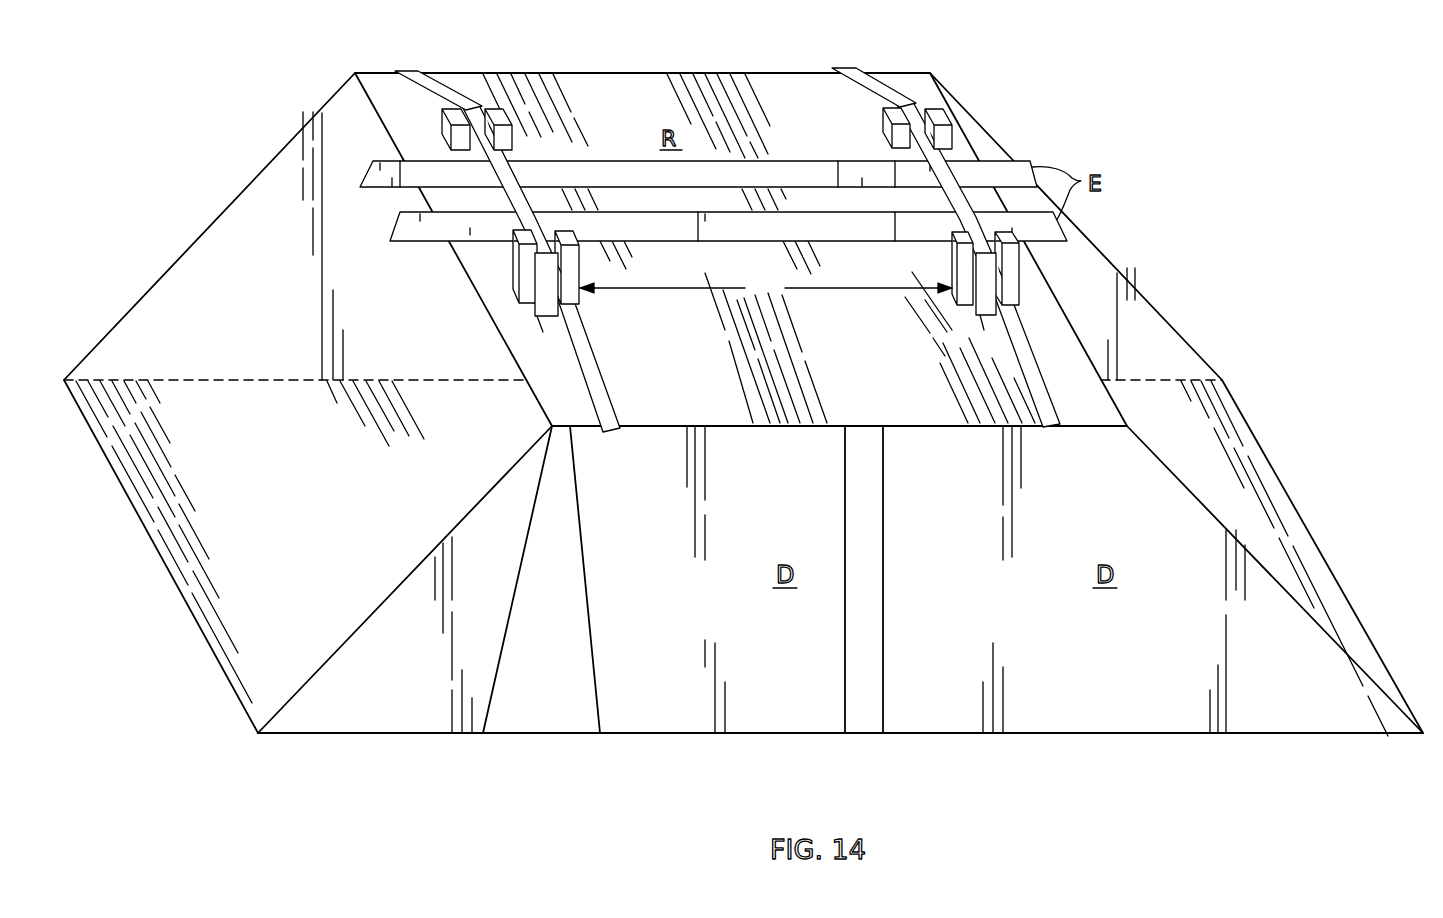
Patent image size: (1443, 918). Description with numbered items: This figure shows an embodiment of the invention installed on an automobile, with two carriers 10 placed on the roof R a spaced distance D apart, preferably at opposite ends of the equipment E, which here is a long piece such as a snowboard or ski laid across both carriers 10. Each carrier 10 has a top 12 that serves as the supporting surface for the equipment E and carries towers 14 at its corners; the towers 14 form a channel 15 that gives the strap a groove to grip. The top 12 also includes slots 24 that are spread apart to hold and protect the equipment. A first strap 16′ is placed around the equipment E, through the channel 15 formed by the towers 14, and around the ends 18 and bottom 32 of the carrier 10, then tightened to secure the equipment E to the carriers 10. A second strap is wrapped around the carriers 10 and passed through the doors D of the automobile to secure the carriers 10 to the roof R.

The carrier 10 is at (618, 308).
The top of the carrier 12 is at (550, 190).
The towers 14 is at (503, 118).
The support channel 15 is at (461, 97).
The first strap 16′ is at (547, 322).
The ends of the carrier 18 is at (586, 262).
The slots 24 is at (484, 226).
The bottom of the carrier 32 is at (525, 306).